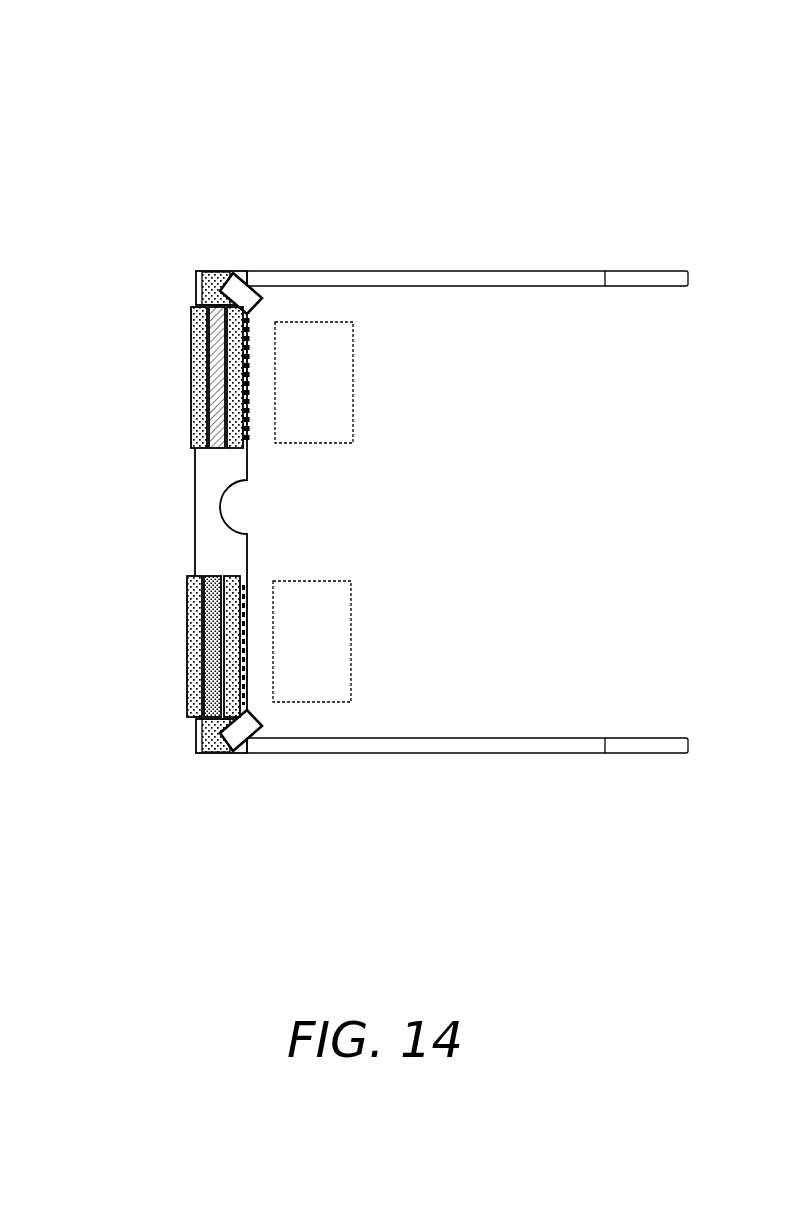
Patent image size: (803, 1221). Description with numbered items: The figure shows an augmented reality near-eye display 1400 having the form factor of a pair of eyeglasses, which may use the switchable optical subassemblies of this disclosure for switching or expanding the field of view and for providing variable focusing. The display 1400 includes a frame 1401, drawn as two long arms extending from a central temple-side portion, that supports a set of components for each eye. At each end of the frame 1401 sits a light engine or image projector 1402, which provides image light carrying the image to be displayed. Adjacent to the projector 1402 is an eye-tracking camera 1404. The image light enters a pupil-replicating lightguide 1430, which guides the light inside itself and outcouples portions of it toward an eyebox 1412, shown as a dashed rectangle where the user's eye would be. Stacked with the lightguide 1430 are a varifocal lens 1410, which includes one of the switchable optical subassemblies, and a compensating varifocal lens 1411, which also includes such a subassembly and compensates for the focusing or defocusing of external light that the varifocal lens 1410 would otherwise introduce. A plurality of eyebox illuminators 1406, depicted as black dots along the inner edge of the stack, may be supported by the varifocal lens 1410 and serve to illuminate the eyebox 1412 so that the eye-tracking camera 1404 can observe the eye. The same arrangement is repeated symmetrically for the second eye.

The augmented reality near-eye display 1400 is at (426, 118).
The frame 1401 is at (567, 271).
The image projector 1402 is at (207, 271).
The eye-tracking camera 1404 is at (240, 273).
The eyebox illuminators 1406 is at (248, 440).
The varifocal lens 1410 is at (237, 365).
The compensating varifocal lens 1411 is at (205, 412).
The eyebox 1412 is at (338, 391).
The pupil-replicating lightguide 1430 is at (215, 323).